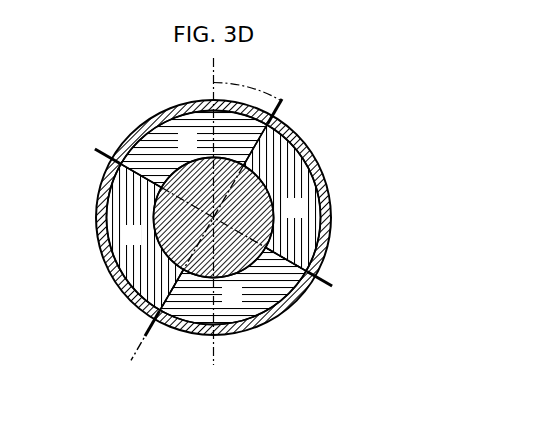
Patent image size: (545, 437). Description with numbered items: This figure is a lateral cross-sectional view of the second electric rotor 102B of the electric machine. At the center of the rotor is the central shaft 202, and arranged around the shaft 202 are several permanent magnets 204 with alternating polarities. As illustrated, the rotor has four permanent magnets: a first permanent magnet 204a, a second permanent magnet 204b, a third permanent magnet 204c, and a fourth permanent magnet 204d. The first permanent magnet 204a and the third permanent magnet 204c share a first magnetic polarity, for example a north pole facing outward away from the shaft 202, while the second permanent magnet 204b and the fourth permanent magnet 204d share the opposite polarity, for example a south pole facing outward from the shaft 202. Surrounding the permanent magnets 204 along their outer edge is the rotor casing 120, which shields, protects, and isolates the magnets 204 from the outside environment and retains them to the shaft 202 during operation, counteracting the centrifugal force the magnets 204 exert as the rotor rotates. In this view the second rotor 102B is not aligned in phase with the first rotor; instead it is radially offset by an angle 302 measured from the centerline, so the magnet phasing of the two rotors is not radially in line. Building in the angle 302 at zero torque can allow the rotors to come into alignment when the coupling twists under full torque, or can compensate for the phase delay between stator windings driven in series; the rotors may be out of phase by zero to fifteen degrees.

The second electric rotor 102B is at (170, 68).
The rotor casing 120 is at (245, 332).
The permanent magnets 204 is at (66, 170).
The first permanent magnet 204a is at (130, 150).
The second permanent magnet 204b is at (298, 182).
The third permanent magnet 204c is at (243, 290).
The fourth permanent magnet 204d is at (143, 272).
The central shaft 202 is at (193, 232).
The angle 302 is at (262, 90).